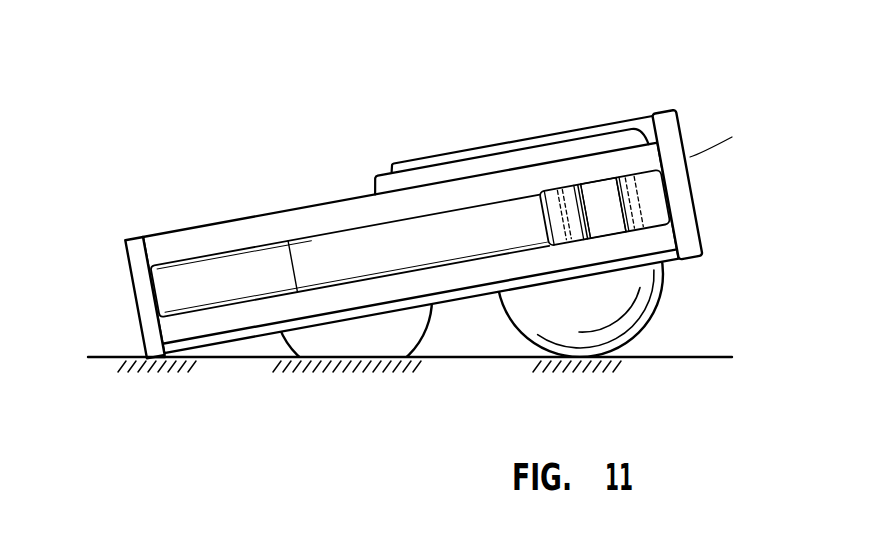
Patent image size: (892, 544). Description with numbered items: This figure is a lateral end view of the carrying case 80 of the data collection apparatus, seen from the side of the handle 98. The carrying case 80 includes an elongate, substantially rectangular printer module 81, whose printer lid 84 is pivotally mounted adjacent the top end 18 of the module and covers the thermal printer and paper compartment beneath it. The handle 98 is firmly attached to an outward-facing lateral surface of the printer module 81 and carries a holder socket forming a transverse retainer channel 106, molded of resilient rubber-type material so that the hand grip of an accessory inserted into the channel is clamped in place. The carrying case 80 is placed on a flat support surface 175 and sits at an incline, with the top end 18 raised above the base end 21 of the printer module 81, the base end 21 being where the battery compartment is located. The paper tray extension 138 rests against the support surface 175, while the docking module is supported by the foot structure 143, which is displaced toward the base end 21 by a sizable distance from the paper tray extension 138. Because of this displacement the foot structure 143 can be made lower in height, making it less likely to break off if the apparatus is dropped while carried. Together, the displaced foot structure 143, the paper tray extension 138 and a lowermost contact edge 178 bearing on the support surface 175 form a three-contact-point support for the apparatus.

The carrying case 80 is at (367, 154).
The printer lid 84 is at (450, 153).
The retainer channel 106 is at (598, 198).
The top end 18 is at (678, 118).
The printer module 81 is at (641, 164).
The handle 98 is at (228, 264).
The base end 21 is at (98, 299).
The foot structure 143 is at (410, 334).
The paper tray extension 138 is at (659, 294).
The support surface 175 is at (688, 357).
The lowermost contact edge 178 is at (151, 358).